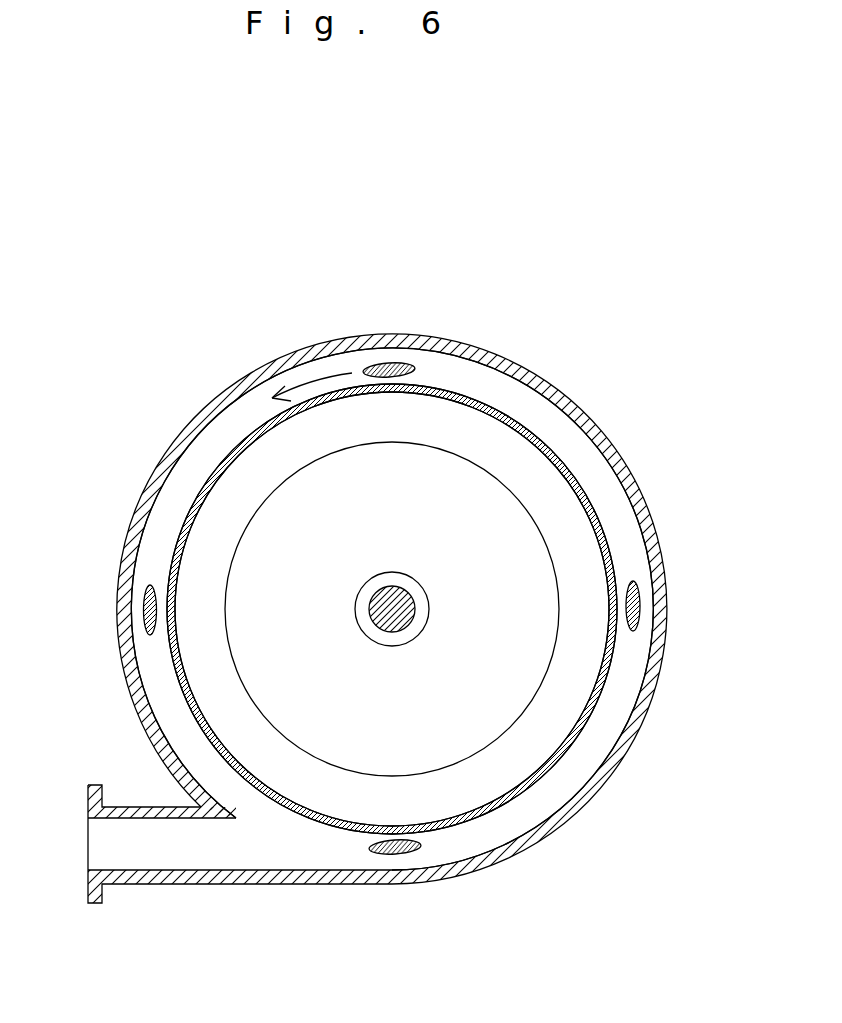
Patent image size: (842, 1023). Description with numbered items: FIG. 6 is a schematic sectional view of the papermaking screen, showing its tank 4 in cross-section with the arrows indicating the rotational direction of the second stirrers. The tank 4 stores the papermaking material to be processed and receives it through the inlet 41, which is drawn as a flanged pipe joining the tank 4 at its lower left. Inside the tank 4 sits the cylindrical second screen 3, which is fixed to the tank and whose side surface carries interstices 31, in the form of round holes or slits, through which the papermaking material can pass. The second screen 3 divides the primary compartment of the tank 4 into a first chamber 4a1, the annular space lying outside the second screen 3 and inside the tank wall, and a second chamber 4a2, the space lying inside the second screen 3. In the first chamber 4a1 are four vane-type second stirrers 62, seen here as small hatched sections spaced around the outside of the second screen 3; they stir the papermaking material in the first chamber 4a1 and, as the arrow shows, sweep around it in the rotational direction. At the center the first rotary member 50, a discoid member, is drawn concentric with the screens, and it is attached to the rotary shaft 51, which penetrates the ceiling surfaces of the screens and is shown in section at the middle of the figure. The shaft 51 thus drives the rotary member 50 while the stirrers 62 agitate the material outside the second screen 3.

The second screen 3 is at (182, 693).
The interstices 31 is at (225, 455).
The tank 4 is at (643, 502).
The first chamber 4a1 is at (175, 495).
The second chamber 4a2 is at (197, 563).
The inlet 41 is at (165, 857).
The first rotary member 50 is at (445, 470).
The rotary shaft 51 is at (400, 601).
The second stirrers 62 is at (395, 364).